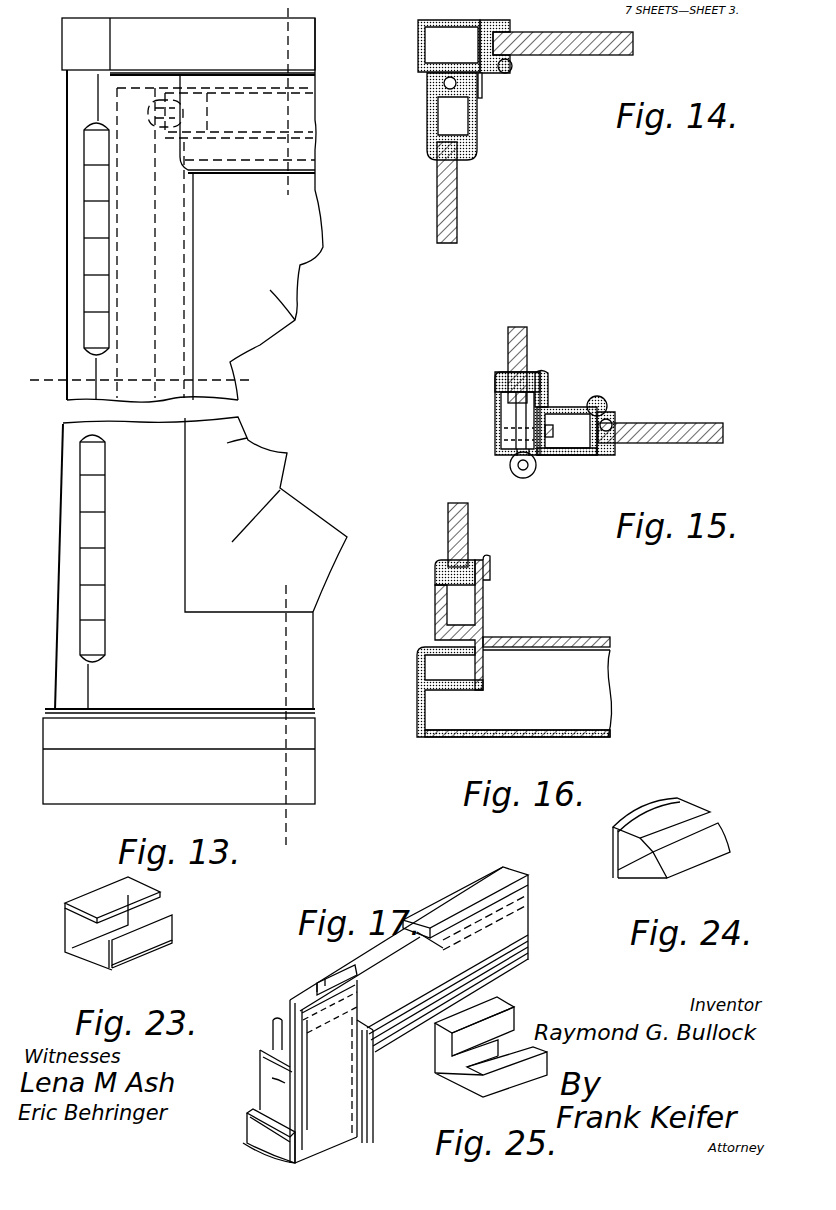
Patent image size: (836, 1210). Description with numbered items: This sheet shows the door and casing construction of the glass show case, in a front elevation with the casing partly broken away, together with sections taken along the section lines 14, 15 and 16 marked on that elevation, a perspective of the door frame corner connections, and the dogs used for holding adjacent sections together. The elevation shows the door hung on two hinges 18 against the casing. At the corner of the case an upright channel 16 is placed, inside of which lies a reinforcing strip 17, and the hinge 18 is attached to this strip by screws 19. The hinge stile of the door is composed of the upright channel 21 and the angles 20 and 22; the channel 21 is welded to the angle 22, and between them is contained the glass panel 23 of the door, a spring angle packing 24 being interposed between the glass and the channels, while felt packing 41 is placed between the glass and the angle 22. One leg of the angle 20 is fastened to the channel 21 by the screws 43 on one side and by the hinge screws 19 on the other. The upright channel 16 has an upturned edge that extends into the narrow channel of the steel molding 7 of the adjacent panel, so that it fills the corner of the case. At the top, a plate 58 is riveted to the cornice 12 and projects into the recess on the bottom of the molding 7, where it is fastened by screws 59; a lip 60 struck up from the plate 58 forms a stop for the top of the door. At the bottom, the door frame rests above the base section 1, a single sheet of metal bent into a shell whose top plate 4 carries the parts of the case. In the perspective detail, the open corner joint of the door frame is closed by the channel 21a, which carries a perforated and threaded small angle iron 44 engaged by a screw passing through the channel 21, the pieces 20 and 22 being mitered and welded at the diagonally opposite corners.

In FIG. 16, the base section 1 is at (417, 704).
In FIG. 16, the top plate 4 is at (610, 647).
In FIG. 14, the steel molding 7 is at (514, 68).
In FIG. 15, the steel molding 7 is at (505, 368).
In FIG. 14, the cornice 12 is at (418, 46).
In FIG. 13, the section line 14x-14x 14 is at (274, 103).
In FIG. 13, the section line 15x-15x 15 is at (160, 381).
In FIG. 13, the upright channel 16 is at (268, 714).
In FIG. 15, the upright channel 16 is at (500, 427).
In FIG. 15, the reinforcing strip 17 is at (497, 449).
In FIG. 13, the hinge 18 is at (93, 255).
In FIG. 15, the hinge 18 is at (526, 477).
In FIG. 15, the screws 19 is at (545, 405).
In FIG. 15, the angle 20 is at (575, 406).
In FIG. 17, the angle 20 is at (437, 908).
In FIG. 15, the upright channel 21 is at (610, 412).
In FIG. 17, the upright channel 21 is at (273, 1020).
In FIG. 17, the channel 21a is at (337, 975).
In FIG. 15, the angle 22 is at (575, 455).
In FIG. 16, the angle 22 is at (437, 585).
In FIG. 17, the angle 22 is at (528, 910).
In FIG. 15, the glass panel 23 is at (686, 423).
In FIG. 15, the spring angle packing 24 is at (612, 423).
In FIG. 14, the felt packing 41 is at (512, 28).
In FIG. 15, the felt packing 41 is at (500, 374).
In FIG. 16, the felt packing 41 is at (437, 568).
In FIG. 15, the screws 43 is at (603, 398).
In FIG. 17, the small angle iron 44 is at (375, 977).
In FIG. 14, the plate 58 is at (482, 80).
In FIG. 14, the screws 59 is at (488, 80).
In FIG. 14, the lip 60 is at (482, 90).